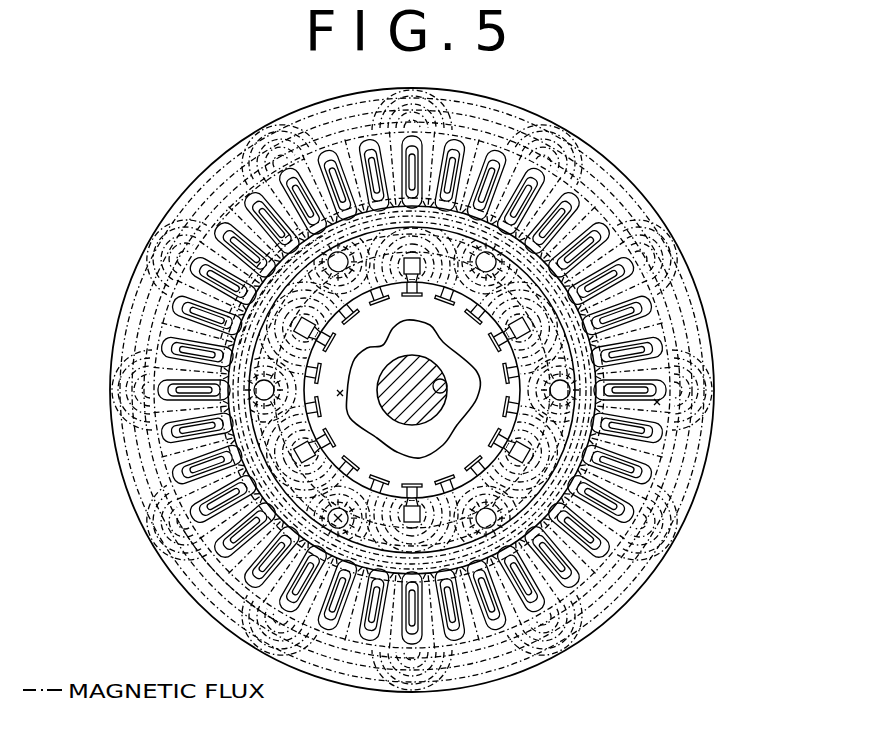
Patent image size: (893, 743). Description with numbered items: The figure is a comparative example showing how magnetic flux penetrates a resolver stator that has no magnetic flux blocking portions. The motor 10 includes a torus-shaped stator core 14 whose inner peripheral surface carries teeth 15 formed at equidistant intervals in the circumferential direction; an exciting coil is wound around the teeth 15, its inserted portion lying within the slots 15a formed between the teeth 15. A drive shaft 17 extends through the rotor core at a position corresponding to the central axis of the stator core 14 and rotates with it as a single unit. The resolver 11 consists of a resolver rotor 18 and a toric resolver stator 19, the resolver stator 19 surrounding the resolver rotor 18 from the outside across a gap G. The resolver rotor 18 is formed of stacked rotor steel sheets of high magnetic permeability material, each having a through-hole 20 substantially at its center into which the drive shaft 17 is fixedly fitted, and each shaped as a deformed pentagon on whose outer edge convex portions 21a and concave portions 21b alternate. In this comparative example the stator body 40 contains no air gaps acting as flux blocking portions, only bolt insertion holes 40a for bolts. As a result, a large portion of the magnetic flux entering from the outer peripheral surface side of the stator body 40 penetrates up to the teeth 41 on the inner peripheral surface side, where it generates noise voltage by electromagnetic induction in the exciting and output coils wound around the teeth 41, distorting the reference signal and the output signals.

The motor 10 is at (675, 237).
The resolver 11 is at (490, 250).
The stator core 14 is at (700, 311).
The teeth 15 is at (693, 486).
The slots 15a is at (580, 483).
The drive shaft 17 is at (445, 374).
The resolver rotor 18 is at (492, 325).
The resolver stator 19 is at (268, 173).
The through-hole 20 is at (447, 386).
The convex portions 21a is at (600, 567).
The concave portions 21b is at (583, 500).
The stator body 40 is at (272, 280).
The bolt insertion holes 40a is at (220, 577).
The teeth 41 is at (247, 280).
The gap G is at (228, 458).